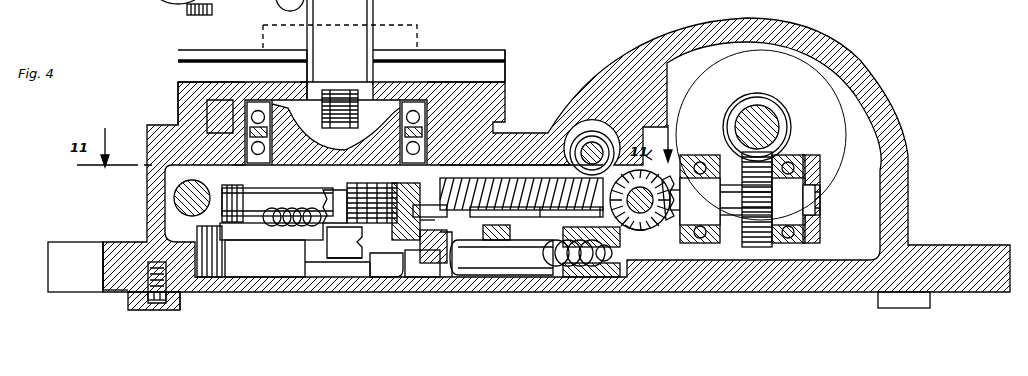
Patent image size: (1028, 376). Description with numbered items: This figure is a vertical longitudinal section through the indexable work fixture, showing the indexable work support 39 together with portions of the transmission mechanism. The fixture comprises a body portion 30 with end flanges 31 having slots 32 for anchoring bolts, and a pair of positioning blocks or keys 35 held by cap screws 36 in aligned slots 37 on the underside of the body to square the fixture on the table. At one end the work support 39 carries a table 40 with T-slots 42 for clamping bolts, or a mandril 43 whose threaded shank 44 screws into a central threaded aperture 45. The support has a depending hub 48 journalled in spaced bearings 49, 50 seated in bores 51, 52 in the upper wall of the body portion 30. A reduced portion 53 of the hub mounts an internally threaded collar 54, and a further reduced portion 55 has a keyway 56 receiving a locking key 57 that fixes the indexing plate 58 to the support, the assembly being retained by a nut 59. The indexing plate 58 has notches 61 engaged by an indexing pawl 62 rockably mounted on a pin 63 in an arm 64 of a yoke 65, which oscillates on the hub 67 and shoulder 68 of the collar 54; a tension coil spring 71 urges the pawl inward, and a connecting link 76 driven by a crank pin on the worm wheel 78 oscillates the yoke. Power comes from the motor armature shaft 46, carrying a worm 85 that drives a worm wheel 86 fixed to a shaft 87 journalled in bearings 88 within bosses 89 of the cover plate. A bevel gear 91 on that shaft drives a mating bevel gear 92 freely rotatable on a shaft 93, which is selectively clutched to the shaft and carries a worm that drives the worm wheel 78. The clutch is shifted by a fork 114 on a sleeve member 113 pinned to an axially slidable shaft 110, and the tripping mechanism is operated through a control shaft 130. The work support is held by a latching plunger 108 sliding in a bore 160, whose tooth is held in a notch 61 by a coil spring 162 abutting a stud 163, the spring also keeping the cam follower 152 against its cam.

The body portion 30 is at (620, 66).
The end flanges 31 is at (86, 246).
The slots 32 is at (103, 258).
The positioning blocks or keys 35 is at (178, 300).
The cap screws 36 is at (136, 297).
The aligned slots 37 is at (112, 290).
The indexable work support 39 is at (511, 97).
The work supporting surface or table 40 is at (470, 51).
The T-slots 42 is at (495, 71).
The mandril 43 is at (345, 22).
The threaded shank 44 is at (341, 94).
The threaded aperture 45 is at (325, 96).
The armature shaft 46 is at (752, 118).
The depending hub 48 is at (335, 206).
The bearing 49 is at (456, 84).
The bearing 50 is at (265, 165).
The bore 51 is at (260, 87).
The bore 52 is at (215, 134).
The reduced portion 53 is at (372, 195).
The internally threaded collar 54 is at (344, 242).
The reduced portion 55 is at (369, 250).
The keyway 56 is at (422, 264).
The locking key 57 is at (386, 265).
The indexing plate 58 is at (455, 250).
The nut 59 is at (356, 268).
The notches or grooves 61 is at (462, 236).
The indexing pawl 62 is at (296, 241).
The pin 63 is at (242, 178).
The arm 64 is at (316, 199).
The yoke 65 is at (430, 213).
The hub 67 is at (419, 211).
The shoulder 68 is at (433, 226).
The tension coil spring 71 is at (275, 222).
The connecting link 76 is at (511, 170).
The worm wheel 78 is at (536, 213).
The worm 85 is at (770, 110).
The worm wheel 86 is at (785, 163).
The shaft 87 is at (800, 205).
The bearings 88 is at (708, 162).
The bosses 89 is at (705, 166).
The bevel gear 91 is at (660, 224).
The mating bevel gear 92 is at (632, 226).
The shaft 93 is at (645, 190).
The latching plunger 108 is at (513, 255).
The shaft 110 is at (594, 148).
The sleeve member 113 is at (603, 160).
The clutch shifting fork 114 is at (662, 157).
The control shaft 130 is at (184, 199).
The cam follower 152 is at (570, 213).
The bore 160 is at (501, 257).
The coil spring 162 is at (562, 266).
The stud 163 is at (614, 252).